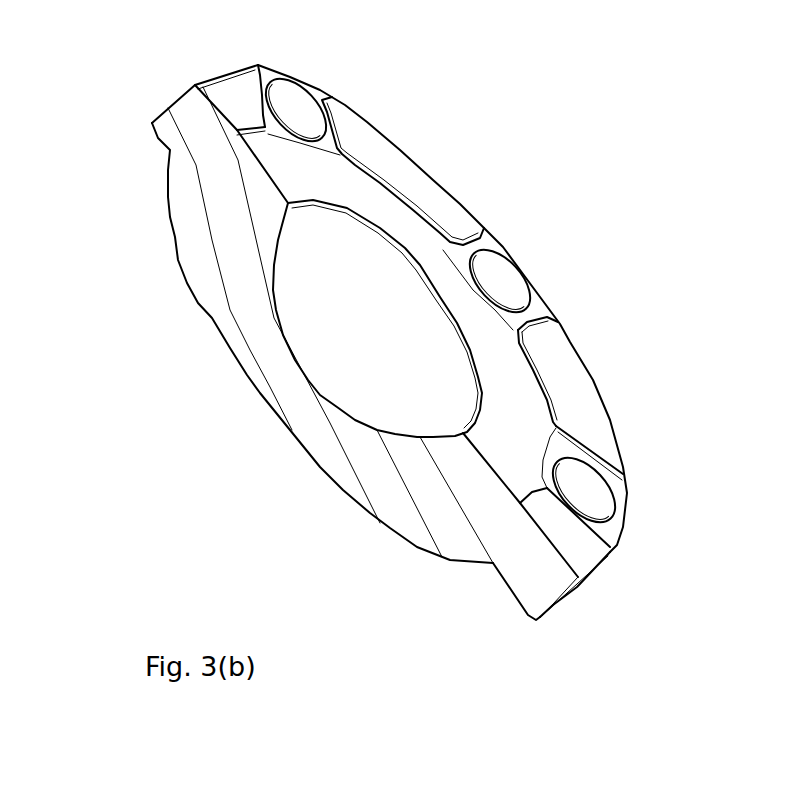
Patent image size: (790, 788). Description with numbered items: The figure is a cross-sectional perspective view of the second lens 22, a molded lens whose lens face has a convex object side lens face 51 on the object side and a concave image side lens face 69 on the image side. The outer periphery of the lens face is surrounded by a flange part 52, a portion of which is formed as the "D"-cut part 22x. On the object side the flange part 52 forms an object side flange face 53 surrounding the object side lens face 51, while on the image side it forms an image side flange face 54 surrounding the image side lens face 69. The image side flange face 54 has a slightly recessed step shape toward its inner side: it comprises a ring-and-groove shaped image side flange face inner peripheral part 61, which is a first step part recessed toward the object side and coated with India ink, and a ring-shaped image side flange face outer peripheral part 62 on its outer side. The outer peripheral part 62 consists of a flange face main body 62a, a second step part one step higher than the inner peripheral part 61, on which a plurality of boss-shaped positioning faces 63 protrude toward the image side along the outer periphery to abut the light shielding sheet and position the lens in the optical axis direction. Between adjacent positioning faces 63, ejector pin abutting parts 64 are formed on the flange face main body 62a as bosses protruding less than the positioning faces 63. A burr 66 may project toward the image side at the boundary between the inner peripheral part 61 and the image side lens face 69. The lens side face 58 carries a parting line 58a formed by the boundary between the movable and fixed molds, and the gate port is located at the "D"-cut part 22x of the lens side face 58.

The second lens 22 is at (95, 9).
The "D"-cut part 22x is at (173, 100).
The object side lens face 51 is at (193, 292).
The flange part 52 is at (483, 228).
The object side flange face 53 is at (155, 138).
The image side flange face 54 is at (552, 452).
The lens side face 58 is at (560, 594).
The parting line 58a is at (598, 585).
The image side flange face inner peripheral part 61 is at (420, 247).
The image side flange face outer peripheral part 62 is at (543, 312).
The flange face main body 62a is at (570, 541).
The positioning face 63 is at (219, 97).
The ejector pin abutting part 64 is at (295, 100).
The burr 66 is at (289, 204).
The image side lens face 69 is at (277, 293).